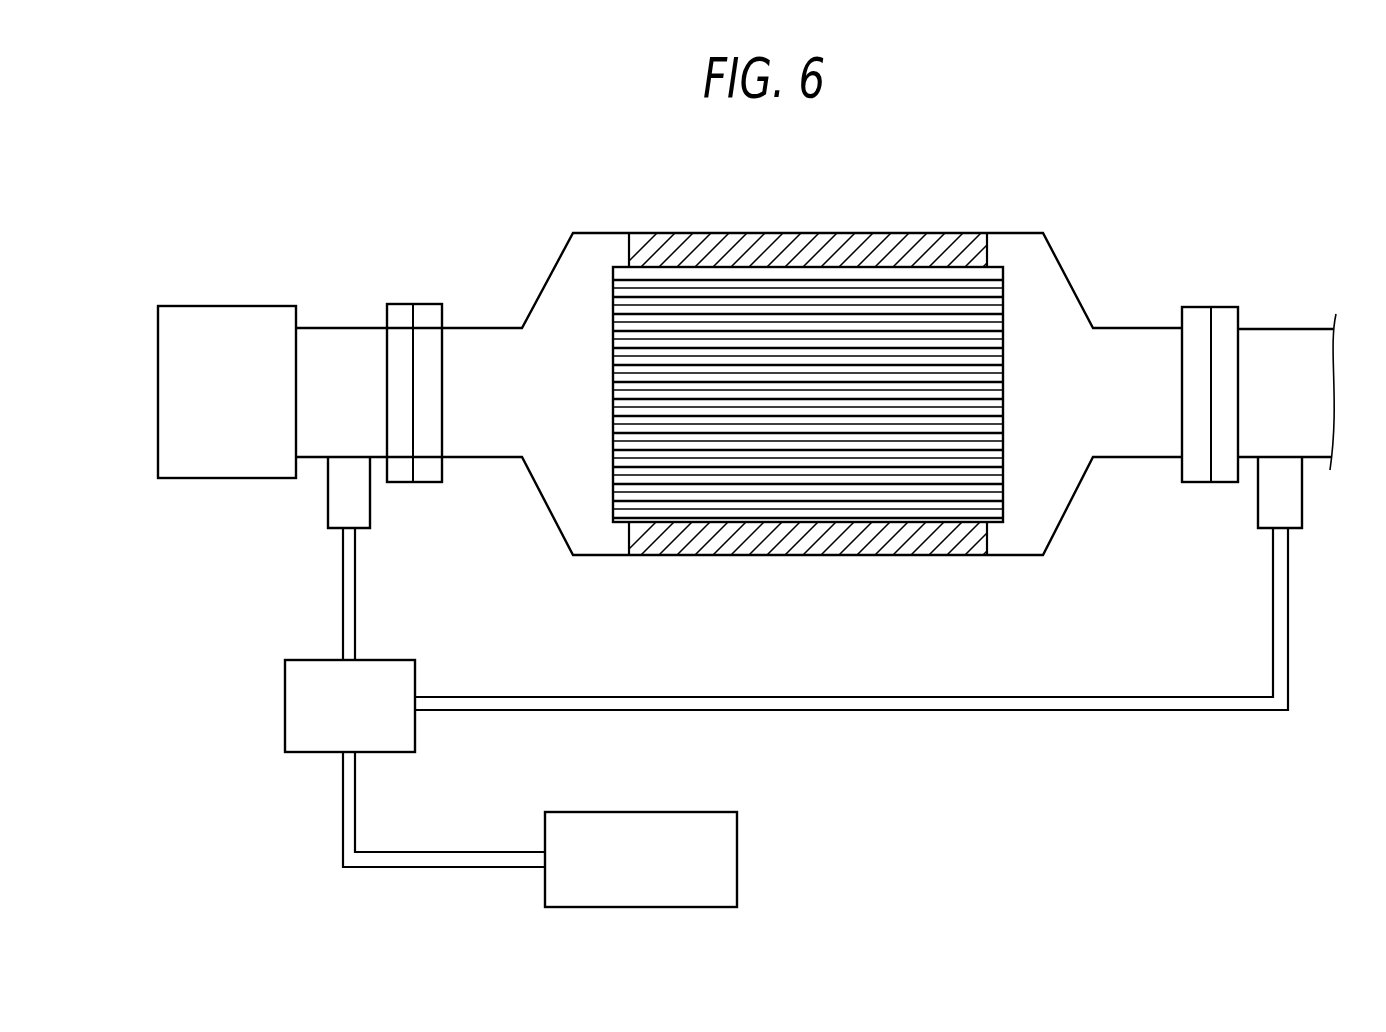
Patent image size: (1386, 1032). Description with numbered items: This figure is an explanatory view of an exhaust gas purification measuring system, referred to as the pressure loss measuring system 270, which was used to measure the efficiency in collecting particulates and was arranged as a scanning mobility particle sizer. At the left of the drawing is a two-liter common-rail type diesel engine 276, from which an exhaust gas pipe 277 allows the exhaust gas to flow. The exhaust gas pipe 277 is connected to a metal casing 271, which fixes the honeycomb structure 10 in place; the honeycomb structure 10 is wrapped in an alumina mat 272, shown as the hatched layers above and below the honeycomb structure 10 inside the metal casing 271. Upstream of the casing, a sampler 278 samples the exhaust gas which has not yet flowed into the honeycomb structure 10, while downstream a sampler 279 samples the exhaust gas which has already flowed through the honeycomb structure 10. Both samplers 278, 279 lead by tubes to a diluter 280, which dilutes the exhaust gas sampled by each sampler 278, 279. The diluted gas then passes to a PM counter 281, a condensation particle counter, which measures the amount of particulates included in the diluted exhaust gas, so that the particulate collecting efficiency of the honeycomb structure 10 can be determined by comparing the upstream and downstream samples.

The honeycomb structure 10 is at (864, 399).
The pressure loss measuring system 270 is at (864, 377).
The metal casing 271 is at (1002, 556).
The alumina mat 272 is at (708, 246).
The diesel engine 276 is at (224, 306).
The exhaust gas pipe 277 is at (337, 338).
The sampler 278 is at (328, 500).
The sampler 279 is at (1302, 507).
The diluter 280 is at (285, 703).
The PM counter 281 is at (737, 858).